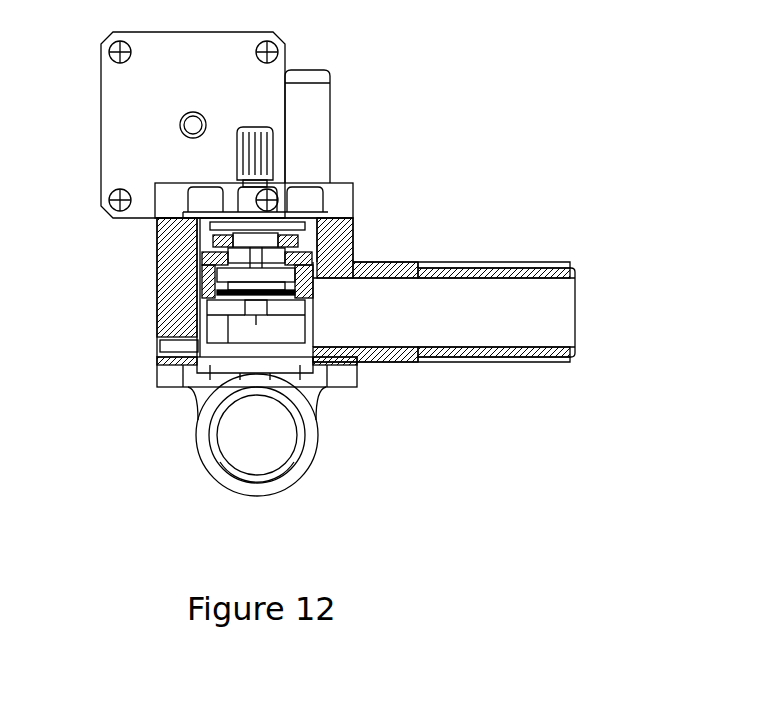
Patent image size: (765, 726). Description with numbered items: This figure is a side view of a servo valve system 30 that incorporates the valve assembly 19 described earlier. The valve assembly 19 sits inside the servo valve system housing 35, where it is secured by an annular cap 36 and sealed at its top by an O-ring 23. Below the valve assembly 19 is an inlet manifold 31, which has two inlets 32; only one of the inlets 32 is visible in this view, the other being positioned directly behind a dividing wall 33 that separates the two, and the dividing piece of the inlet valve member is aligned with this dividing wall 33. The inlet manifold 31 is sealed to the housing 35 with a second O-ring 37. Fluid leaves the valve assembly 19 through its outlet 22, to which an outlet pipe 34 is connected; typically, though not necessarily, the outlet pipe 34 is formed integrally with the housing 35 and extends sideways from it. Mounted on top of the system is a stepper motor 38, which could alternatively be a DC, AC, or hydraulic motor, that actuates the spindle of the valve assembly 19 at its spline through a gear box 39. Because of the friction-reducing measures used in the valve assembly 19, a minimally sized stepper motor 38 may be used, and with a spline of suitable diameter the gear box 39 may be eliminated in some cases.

The valve assembly 19 is at (315, 286).
The outlet 22 is at (300, 307).
The O-ring 23 is at (355, 235).
The servo valve system 30 is at (372, 251).
The inlet manifold 31 is at (330, 437).
The inlets 32 is at (305, 463).
The dividing wall 33 is at (263, 452).
The outlet pipe 34 is at (545, 298).
The housing 35 is at (355, 218).
The annular cap 36 is at (310, 205).
The O-ring 37 is at (347, 372).
The stepper motor 38 is at (273, 82).
The gear box 39 is at (317, 107).